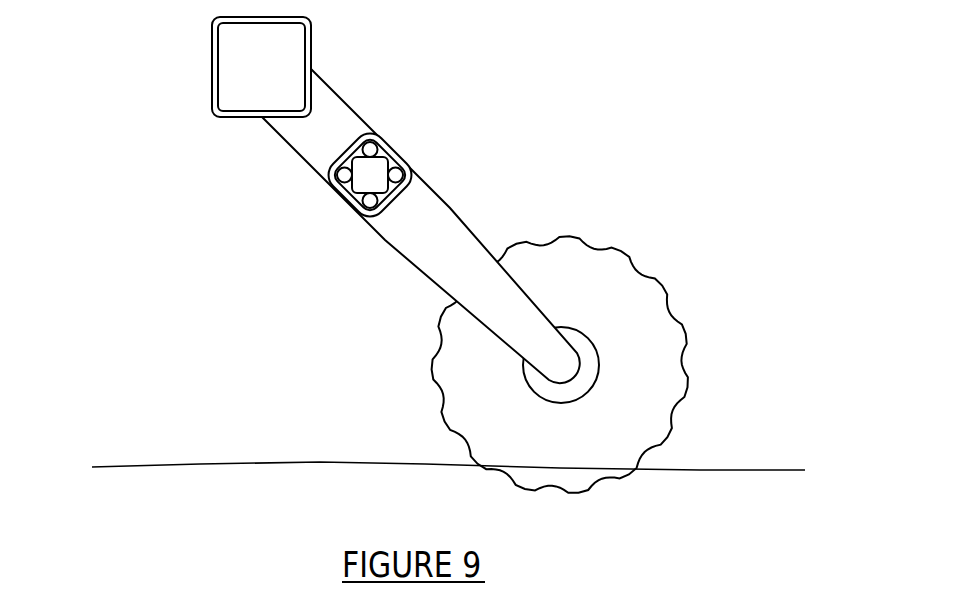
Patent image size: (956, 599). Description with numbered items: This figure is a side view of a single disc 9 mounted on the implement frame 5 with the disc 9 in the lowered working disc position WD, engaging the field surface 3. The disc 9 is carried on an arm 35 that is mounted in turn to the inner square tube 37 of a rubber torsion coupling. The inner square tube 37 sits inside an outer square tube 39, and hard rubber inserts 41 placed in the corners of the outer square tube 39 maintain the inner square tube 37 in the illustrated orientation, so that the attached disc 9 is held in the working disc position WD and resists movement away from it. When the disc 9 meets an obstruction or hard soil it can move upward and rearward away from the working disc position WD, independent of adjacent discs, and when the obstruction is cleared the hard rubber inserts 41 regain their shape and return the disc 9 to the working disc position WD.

The field surface 3 is at (182, 464).
The implement frame 5 is at (212, 90).
The disc 9 is at (616, 327).
The arm 35 is at (459, 213).
The inner square tube 37 is at (306, 185).
The outer square tube 39 is at (347, 203).
The hard rubber inserts 41 is at (352, 200).
The working disc position WD is at (687, 377).